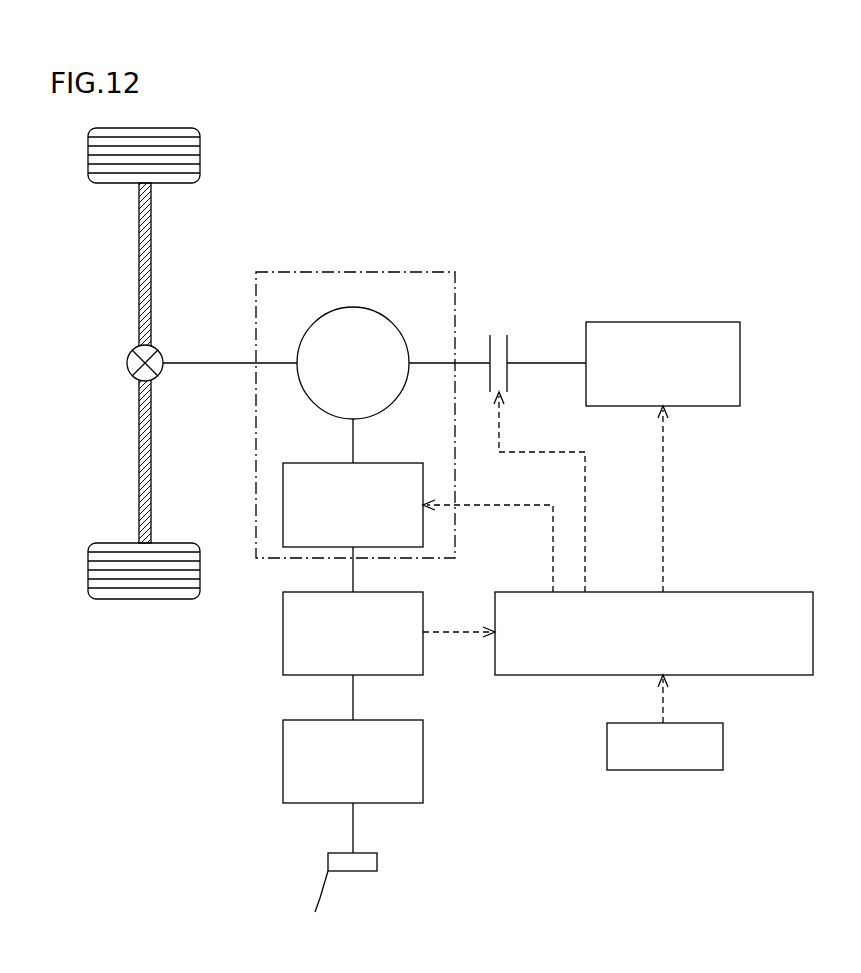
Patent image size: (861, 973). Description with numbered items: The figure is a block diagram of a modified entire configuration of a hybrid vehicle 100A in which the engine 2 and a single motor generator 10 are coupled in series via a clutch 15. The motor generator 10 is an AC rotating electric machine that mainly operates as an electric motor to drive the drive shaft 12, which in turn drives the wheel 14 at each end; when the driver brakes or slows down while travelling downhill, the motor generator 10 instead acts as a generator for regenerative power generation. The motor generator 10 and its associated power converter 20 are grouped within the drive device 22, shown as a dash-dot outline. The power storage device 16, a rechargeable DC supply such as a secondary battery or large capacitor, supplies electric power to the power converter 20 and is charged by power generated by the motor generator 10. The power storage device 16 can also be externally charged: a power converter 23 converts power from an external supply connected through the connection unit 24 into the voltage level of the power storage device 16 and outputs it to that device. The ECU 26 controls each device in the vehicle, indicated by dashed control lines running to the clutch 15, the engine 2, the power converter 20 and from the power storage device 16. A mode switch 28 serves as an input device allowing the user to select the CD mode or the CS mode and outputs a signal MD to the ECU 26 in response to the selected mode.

The hybrid vehicle 100A is at (483, 155).
The wheel 14 is at (162, 127).
The drive shaft 12 is at (152, 266).
The drive device 22 is at (373, 272).
The motor generator 10 is at (373, 308).
The power converter 20 is at (375, 463).
The power storage device 16 is at (382, 592).
The power converter 23 is at (382, 720).
The connection unit 24 is at (368, 873).
The clutch 15 is at (500, 335).
The engine 2 is at (665, 322).
The ECU 26 is at (767, 592).
The mode switch 28 is at (692, 723).